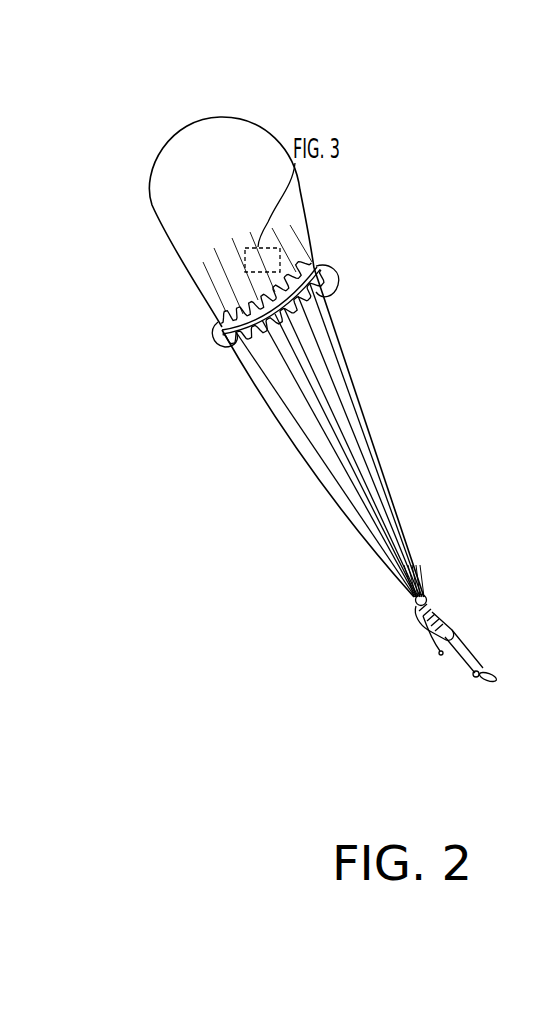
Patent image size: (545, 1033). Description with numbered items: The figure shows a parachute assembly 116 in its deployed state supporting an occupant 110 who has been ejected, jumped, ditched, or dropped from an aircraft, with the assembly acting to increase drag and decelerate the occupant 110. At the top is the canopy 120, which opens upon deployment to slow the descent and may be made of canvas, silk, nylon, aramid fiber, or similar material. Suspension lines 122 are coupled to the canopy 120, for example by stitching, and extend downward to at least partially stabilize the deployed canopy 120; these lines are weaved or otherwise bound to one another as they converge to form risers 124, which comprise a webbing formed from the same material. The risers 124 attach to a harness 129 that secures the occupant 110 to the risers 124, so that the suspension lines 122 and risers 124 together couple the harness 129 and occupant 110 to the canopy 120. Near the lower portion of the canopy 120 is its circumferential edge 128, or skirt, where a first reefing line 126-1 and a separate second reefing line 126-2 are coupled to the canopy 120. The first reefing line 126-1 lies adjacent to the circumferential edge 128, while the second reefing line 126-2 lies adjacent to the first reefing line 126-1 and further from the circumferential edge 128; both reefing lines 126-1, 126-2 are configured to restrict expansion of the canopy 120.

The parachute assembly 116 is at (176, 101).
The canopy 120 is at (233, 189).
The suspension lines 122 is at (352, 352).
The risers 124 is at (432, 550).
The first reefing line 126-1 is at (235, 340).
The second reefing line 126-2 is at (316, 272).
The circumferential edge 128 is at (222, 318).
The harness 129 is at (430, 611).
The occupant 110 is at (395, 616).